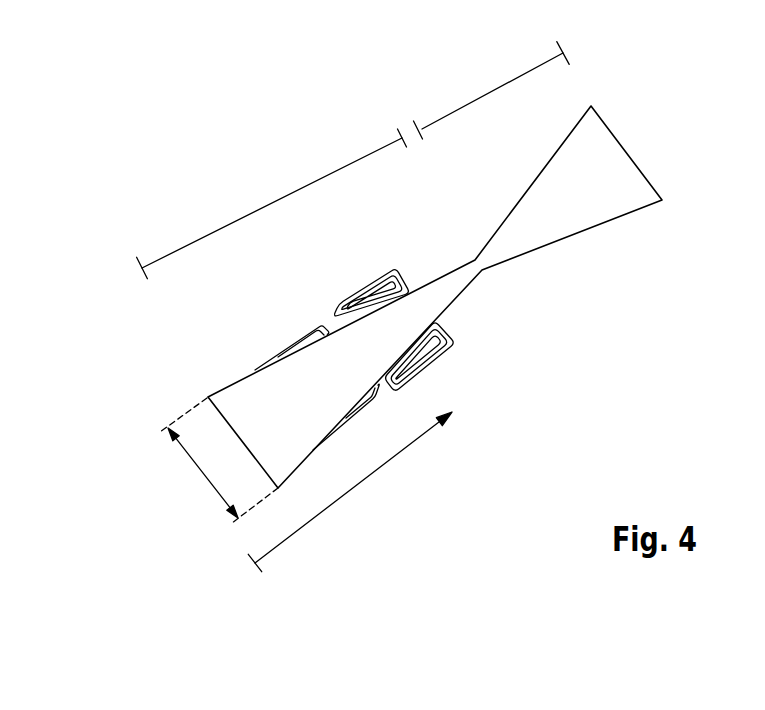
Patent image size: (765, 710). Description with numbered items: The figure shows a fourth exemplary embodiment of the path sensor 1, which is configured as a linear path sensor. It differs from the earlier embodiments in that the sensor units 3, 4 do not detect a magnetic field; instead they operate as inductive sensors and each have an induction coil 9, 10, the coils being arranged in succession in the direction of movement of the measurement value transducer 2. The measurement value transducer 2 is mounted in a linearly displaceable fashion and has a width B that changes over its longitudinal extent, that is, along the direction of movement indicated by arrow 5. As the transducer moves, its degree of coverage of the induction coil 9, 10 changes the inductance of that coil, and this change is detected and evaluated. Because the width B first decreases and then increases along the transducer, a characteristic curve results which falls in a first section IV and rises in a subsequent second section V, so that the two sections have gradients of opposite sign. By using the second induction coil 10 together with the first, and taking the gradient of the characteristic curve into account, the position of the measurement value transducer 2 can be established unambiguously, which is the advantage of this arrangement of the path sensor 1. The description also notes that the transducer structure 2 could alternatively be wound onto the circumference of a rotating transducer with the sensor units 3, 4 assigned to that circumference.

The path sensor 1 is at (117, 82).
The measurement value transducer 2 is at (572, 152).
The sensor unit 3 is at (293, 341).
The sensor unit 4 is at (363, 288).
The arrow 5 is at (373, 472).
The induction coil 9 is at (352, 422).
The second induction coil 10 is at (432, 363).
The width B is at (202, 472).
The first section IV is at (272, 202).
The second section V is at (490, 90).